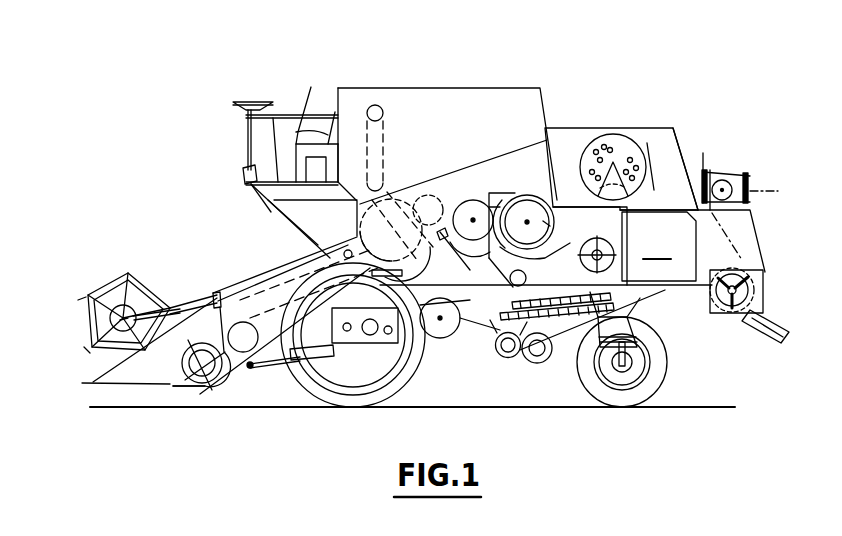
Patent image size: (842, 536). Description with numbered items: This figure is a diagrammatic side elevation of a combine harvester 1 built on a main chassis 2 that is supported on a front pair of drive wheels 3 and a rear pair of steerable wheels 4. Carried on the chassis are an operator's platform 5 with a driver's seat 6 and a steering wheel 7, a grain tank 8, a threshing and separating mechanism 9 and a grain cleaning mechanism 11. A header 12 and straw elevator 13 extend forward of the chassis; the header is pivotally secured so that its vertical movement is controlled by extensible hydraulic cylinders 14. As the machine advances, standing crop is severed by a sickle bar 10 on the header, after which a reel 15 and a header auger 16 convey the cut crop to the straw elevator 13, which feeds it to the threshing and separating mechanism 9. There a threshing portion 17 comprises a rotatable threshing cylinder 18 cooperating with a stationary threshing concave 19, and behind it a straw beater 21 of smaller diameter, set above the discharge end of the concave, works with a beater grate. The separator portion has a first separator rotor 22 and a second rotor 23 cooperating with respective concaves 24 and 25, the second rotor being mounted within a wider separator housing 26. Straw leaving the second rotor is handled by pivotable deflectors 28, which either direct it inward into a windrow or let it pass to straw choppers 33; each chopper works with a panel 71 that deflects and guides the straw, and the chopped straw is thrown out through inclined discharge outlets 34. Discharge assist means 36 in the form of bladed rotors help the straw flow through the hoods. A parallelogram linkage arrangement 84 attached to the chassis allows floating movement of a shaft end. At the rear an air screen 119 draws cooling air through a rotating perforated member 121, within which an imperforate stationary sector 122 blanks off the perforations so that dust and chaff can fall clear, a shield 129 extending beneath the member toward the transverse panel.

The combine harvester 1 is at (603, 120).
The main chassis 2 is at (252, 268).
The front drive wheels 3 is at (402, 377).
The rear steerable wheels 4 is at (664, 380).
The operator's platform 5 is at (262, 190).
The driver's seat 6 is at (307, 140).
The steering wheel 7 is at (244, 101).
The grain tank 8 is at (474, 89).
The threshing and separating mechanism 9 is at (502, 178).
The sickle bar 10 is at (160, 393).
The grain cleaning mechanism 11 is at (645, 305).
The header 12 is at (221, 386).
The straw elevator 13 is at (247, 285).
The hydraulic cylinders 14 is at (312, 353).
The reel 15 is at (103, 283).
The header auger 16 is at (203, 382).
The threshing portion 17 is at (401, 180).
The threshing cylinder 18 is at (362, 222).
The threshing concave 19 is at (340, 247).
The straw beater 21 is at (430, 195).
The first separator rotor 22 is at (476, 198).
The second separator rotor 23 is at (545, 224).
The first separator concave 24 is at (452, 245).
The second separator concave 25 is at (587, 262).
The separator housing 26 is at (523, 195).
The pivotable deflectors 28 is at (659, 246).
The straw choppers 33 is at (765, 273).
The discharge outlets 34 is at (787, 322).
The discharge assist means 36 is at (638, 220).
The panel 71 is at (750, 243).
The parallelogram linkage arrangement 84 is at (765, 178).
The air screen 119 is at (660, 155).
The perforated member 121 is at (633, 132).
The stationary sector 122 is at (670, 182).
The shield 129 is at (568, 197).